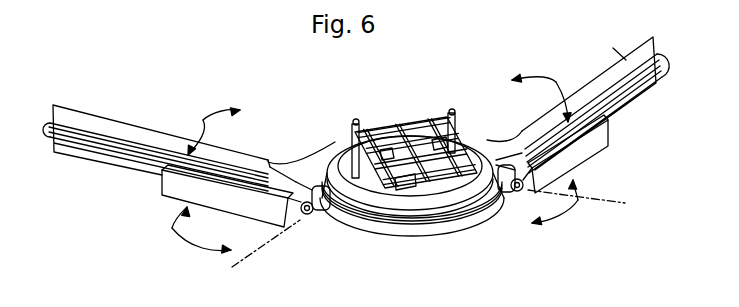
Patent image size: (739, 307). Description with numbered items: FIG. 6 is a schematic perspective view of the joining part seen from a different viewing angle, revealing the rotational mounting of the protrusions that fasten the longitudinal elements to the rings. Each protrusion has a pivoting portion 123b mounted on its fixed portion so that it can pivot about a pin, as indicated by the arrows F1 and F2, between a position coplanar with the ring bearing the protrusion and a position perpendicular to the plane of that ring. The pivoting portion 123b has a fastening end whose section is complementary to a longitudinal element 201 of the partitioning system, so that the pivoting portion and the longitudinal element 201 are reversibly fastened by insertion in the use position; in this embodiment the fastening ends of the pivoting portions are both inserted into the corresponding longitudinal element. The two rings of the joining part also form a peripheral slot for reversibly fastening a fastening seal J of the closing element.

The longitudinal element 201 is at (588, 147).
The pivoting portion 123b is at (502, 195).
The fastening seal J is at (613, 48).
The arrow F1 is at (203, 120).
The arrow F2 is at (172, 228).